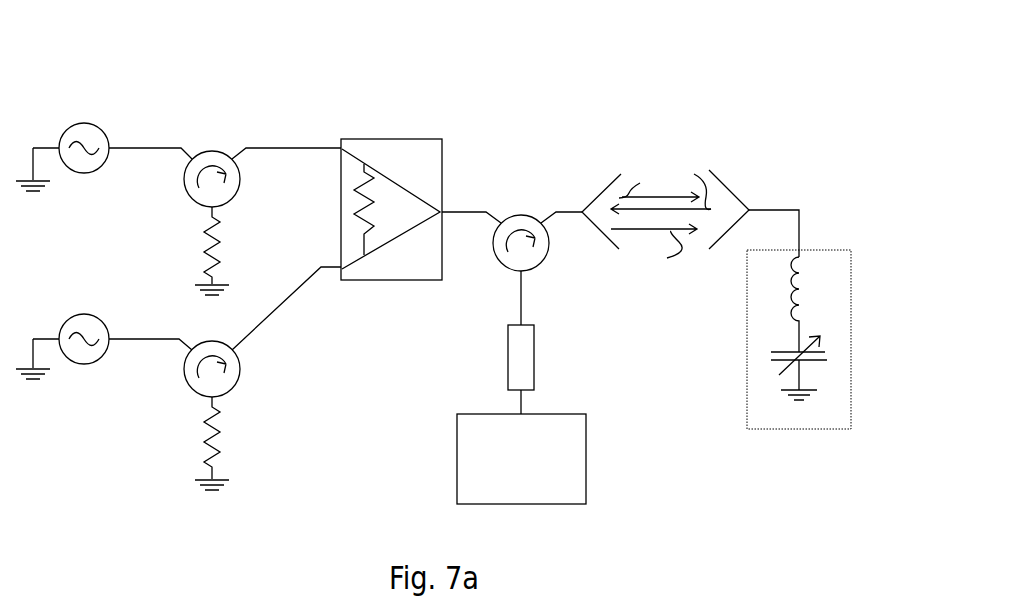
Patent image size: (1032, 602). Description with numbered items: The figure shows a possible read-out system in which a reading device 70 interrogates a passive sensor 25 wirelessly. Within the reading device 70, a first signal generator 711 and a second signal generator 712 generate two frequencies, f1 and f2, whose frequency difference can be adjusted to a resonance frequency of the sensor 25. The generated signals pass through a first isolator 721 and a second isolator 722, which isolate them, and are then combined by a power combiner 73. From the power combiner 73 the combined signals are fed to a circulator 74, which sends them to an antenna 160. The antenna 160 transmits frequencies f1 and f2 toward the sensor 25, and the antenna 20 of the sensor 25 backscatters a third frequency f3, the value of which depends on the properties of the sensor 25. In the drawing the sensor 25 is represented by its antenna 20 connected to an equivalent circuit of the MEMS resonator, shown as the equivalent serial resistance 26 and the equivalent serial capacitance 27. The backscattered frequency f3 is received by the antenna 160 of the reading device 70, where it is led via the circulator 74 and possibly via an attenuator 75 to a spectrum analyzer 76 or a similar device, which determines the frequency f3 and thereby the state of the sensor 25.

The reading electronics 70 is at (249, 72).
The first signal generator 711 is at (113, 138).
The second signal generator 712 is at (115, 308).
The first isolator 721 is at (238, 202).
The second isolator 722 is at (212, 397).
The power combiner 73 is at (432, 162).
The circulator 74 is at (545, 223).
The attenuator 75 is at (522, 355).
The spectrum analyzer 76 is at (570, 453).
The antenna 160 is at (621, 170).
The antenna 20 is at (802, 222).
The sensor structure 25 is at (723, 292).
The equivalent serial resistance of the MEMS resonator 26 is at (795, 287).
The equivalent serial capacitance of the MEMS resonator 27 is at (800, 353).